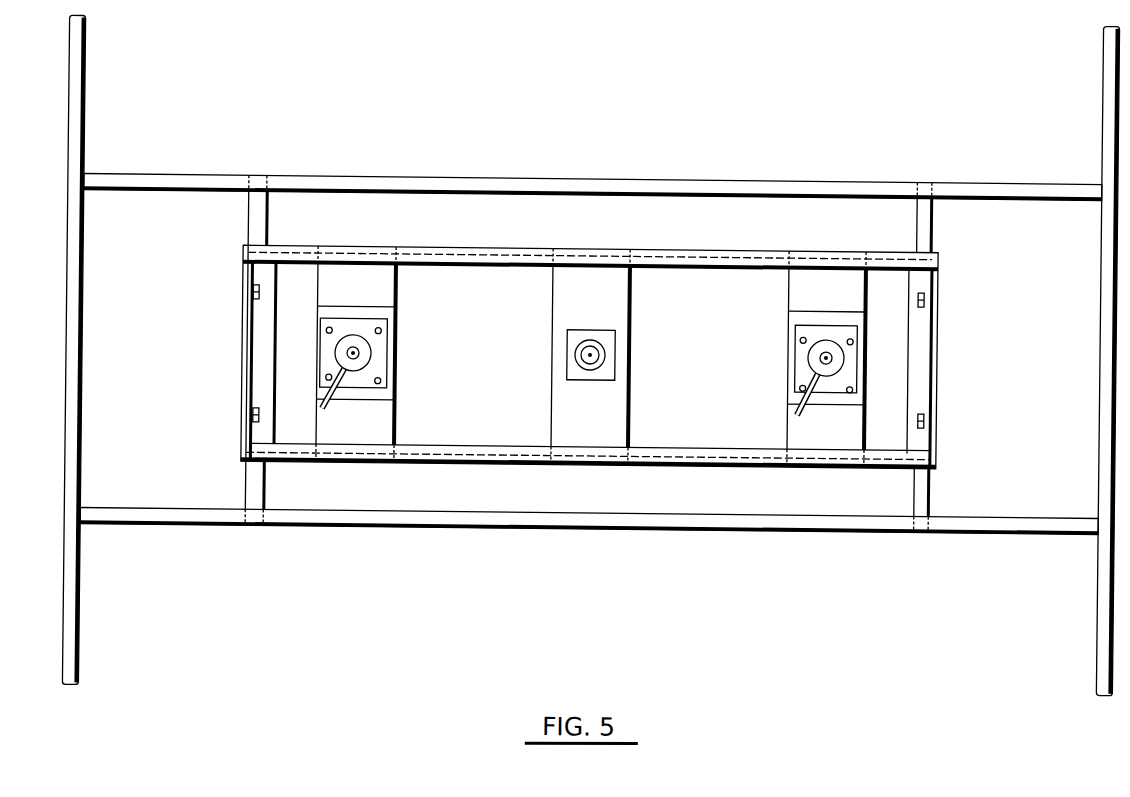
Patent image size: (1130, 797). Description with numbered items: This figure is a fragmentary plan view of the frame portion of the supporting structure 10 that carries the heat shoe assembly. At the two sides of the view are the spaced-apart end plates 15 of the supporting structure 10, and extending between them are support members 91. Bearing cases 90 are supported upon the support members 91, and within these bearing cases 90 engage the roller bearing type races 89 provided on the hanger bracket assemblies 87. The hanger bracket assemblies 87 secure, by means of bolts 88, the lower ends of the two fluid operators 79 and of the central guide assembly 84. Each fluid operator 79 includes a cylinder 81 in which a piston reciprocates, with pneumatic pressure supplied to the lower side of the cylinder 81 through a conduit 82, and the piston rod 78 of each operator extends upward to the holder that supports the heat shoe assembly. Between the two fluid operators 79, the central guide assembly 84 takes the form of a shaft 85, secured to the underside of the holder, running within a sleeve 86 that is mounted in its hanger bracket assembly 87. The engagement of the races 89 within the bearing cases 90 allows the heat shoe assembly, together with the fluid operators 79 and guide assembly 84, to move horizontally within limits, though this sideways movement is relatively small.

The supporting structure 10 is at (461, 134).
The end plate 15 is at (73, 89).
The piston rod 78 is at (361, 354).
The fluid operator 79 is at (372, 359).
The cylinder 81 is at (336, 354).
The conduit 82 is at (330, 406).
The central guide assembly 84 is at (331, 368).
The shaft 85 is at (593, 352).
The sleeve 86 is at (599, 363).
The hanger bracket assembly 87 is at (376, 293).
The bolt 88 is at (384, 390).
The roller bearing type race 89 is at (258, 293).
The bearing case 90 is at (261, 212).
The support member 91 is at (1079, 187).